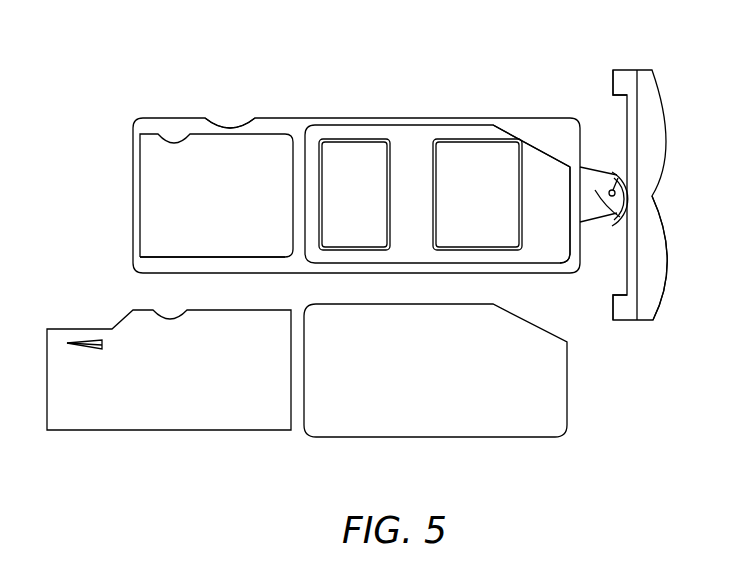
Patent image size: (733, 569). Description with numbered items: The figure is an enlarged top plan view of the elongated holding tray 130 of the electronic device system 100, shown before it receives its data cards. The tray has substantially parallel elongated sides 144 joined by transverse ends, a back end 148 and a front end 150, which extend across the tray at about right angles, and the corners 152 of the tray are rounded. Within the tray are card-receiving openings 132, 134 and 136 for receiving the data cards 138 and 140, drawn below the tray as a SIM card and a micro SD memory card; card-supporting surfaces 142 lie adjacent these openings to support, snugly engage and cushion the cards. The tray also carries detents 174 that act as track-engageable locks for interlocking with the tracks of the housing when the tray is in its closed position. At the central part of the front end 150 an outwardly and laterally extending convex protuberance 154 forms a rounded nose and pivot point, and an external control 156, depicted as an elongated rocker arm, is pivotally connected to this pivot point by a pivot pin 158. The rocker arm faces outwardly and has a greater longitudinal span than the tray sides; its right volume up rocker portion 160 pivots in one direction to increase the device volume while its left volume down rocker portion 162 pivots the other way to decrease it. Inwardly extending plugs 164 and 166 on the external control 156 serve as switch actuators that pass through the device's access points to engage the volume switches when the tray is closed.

The electronic device system 100 is at (548, 274).
The elongated holding tray 130 is at (332, 132).
The card-receiving opening 132 is at (455, 140).
The card-receiving opening 134 is at (373, 140).
The card-receiving opening 136 is at (187, 138).
The data card 138 is at (565, 386).
The data card 140 is at (47, 384).
The card-supporting surfaces 142 is at (513, 134).
The elongated side 144 is at (552, 137).
The back end 148 is at (140, 177).
The front end 150 is at (580, 140).
The corners 152 is at (137, 258).
The convex protuberance 154 is at (617, 183).
The external control 156 is at (655, 196).
The pivot pin 158 is at (618, 198).
The right volume up rocker portion 160 is at (652, 91).
The left volume down rocker portion 162 is at (668, 254).
The inwardly extending plug 164 is at (612, 90).
The inwardly extending plug 166 is at (605, 302).
The detents 174 is at (222, 125).